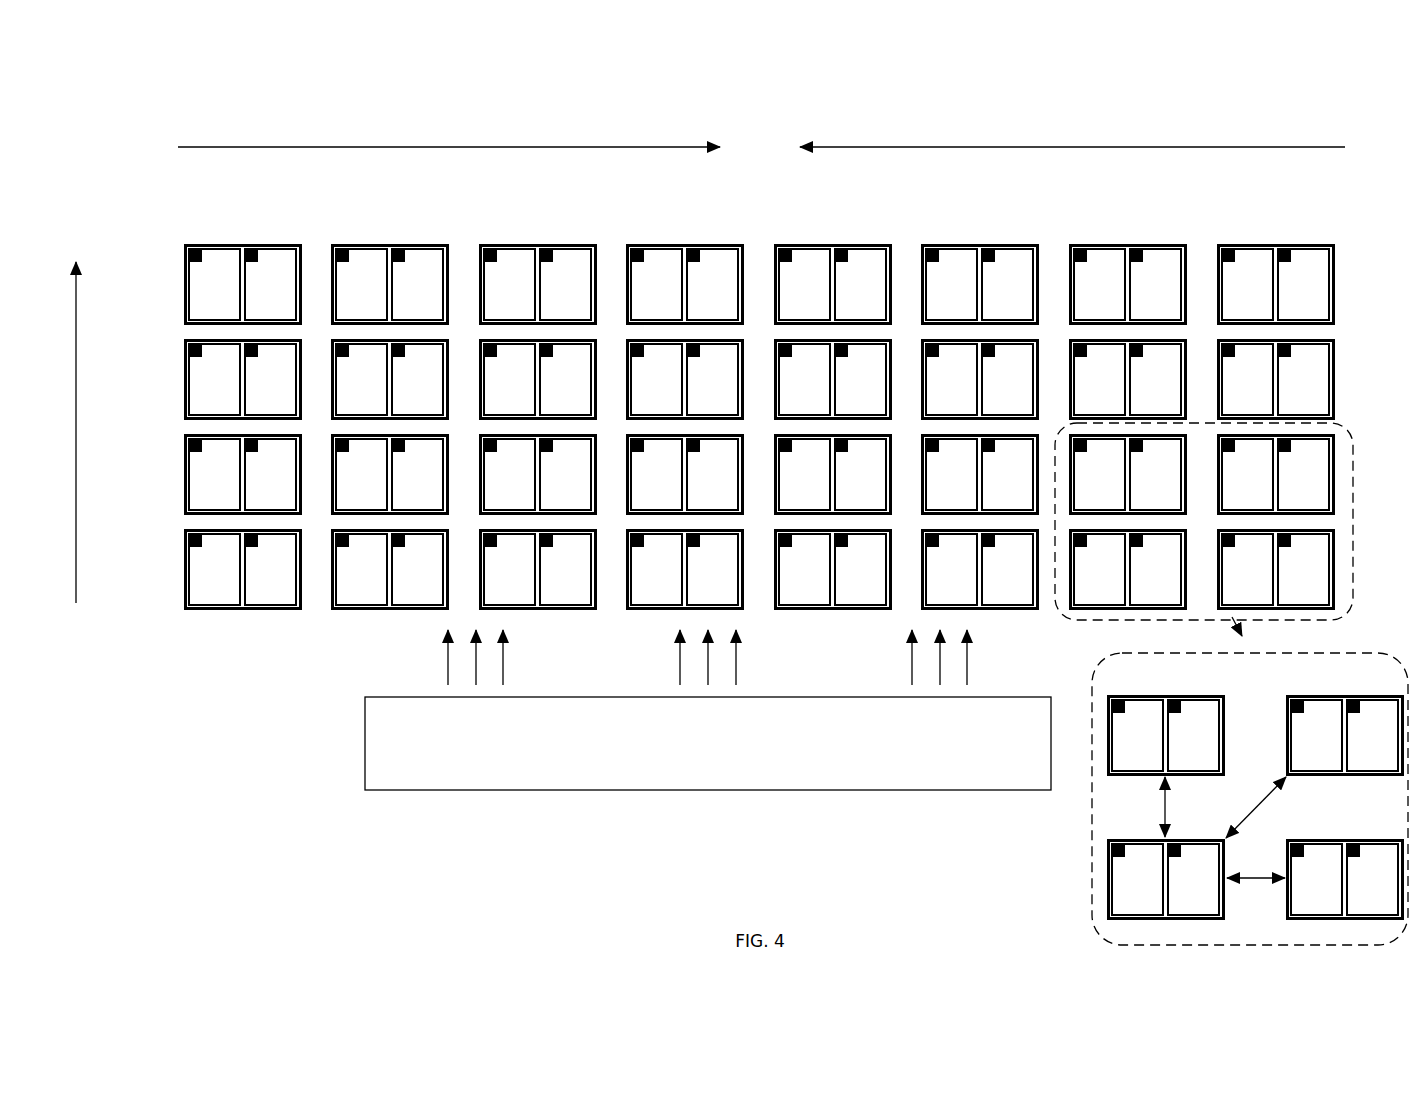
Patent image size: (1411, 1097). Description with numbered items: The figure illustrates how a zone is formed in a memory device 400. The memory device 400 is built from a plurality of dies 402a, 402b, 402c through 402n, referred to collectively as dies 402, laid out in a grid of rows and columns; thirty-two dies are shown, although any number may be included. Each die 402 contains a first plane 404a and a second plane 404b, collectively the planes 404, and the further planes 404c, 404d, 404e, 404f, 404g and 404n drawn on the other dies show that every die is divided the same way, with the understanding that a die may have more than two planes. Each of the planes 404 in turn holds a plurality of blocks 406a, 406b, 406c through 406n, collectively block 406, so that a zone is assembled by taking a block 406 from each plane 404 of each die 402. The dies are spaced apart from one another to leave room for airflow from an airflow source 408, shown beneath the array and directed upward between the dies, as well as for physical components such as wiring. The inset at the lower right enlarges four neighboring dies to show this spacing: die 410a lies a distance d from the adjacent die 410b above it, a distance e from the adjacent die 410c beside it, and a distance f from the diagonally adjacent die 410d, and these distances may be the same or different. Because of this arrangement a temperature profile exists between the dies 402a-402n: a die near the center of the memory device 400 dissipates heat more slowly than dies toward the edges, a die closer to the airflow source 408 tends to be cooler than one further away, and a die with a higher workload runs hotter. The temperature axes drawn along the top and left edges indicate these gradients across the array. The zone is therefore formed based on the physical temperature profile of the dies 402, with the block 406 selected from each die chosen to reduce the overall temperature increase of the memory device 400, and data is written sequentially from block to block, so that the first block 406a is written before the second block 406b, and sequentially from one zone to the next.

The memory device 400 is at (159, 93).
The dies 402 is at (490, 244).
The die 402a is at (184, 286).
The die 402b is at (184, 383).
The die 402c is at (184, 478).
The die 402n is at (184, 573).
The planes 404 is at (346, 301).
The first plane 404a is at (196, 309).
The second plane 404b is at (252, 309).
The plane 404c is at (196, 404).
The plane 404d is at (252, 404).
The plane 404e is at (196, 499).
The plane 404f is at (252, 499).
The plane 404g is at (196, 594).
The plane 404n is at (252, 594).
The block 406 is at (549, 244).
The block 406a is at (195, 244).
The block 406b is at (252, 244).
The block 406c is at (343, 244).
The block 406n is at (402, 244).
The airflow source 408 is at (693, 769).
The die 410a is at (1166, 894).
The adjacent die 410b is at (1166, 724).
The adjacent die 410c is at (1345, 892).
The diagonally adjacent die 410d is at (1345, 724).